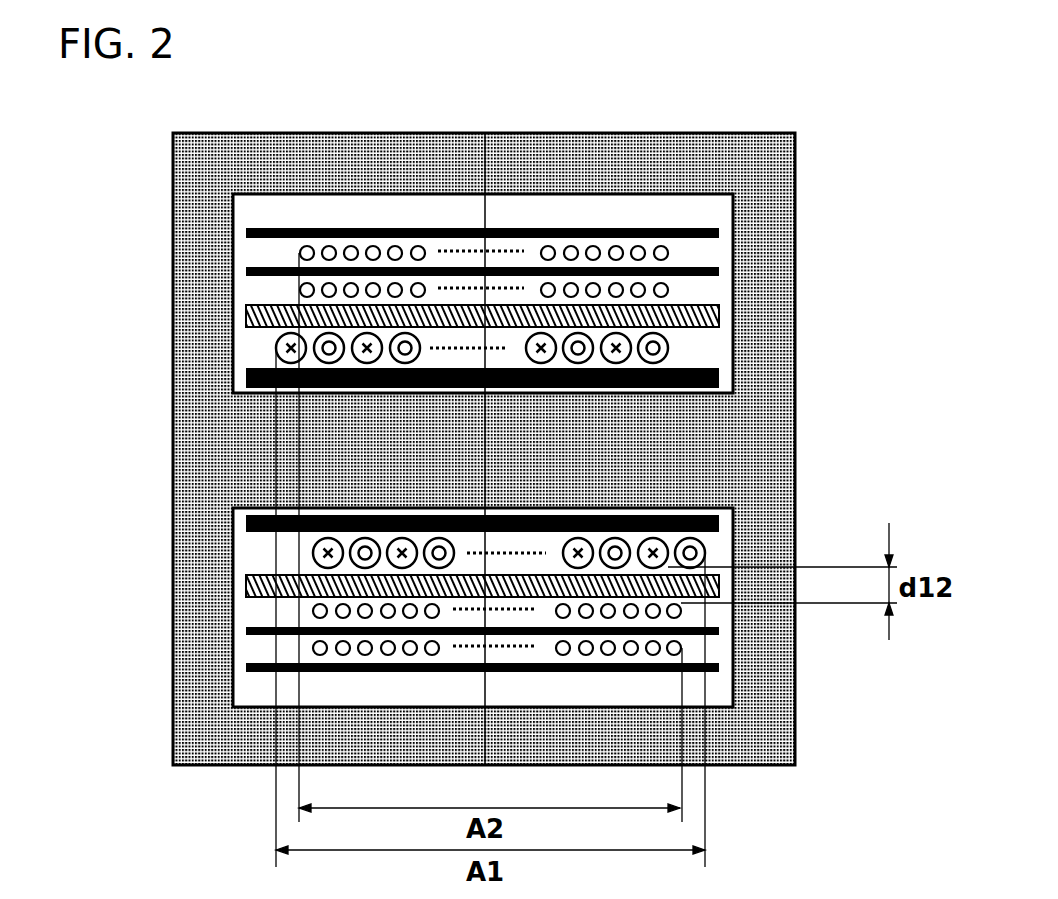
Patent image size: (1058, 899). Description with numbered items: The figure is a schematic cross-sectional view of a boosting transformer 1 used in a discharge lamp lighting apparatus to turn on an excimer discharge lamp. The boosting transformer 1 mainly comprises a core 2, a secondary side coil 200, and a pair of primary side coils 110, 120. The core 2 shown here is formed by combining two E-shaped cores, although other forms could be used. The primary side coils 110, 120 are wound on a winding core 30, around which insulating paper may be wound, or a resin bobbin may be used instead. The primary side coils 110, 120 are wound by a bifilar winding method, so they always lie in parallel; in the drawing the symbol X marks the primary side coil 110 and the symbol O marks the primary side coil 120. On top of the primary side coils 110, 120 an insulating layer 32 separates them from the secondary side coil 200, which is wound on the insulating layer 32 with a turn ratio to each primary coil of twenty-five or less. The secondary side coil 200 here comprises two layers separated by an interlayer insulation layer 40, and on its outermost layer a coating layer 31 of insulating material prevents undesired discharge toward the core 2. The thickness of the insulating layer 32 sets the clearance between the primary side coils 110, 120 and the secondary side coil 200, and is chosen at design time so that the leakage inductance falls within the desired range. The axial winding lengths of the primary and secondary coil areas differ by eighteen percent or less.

The boosting transformer 1 is at (767, 118).
The core 2 is at (795, 193).
The winding core 30 is at (246, 378).
The coating layer 31 is at (246, 233).
The insulating layer 32 is at (246, 313).
The interlayer insulation layer 40 is at (246, 271).
The primary side coil 110 is at (592, 448).
The primary side coil 120 is at (668, 348).
The secondary side coil 200 is at (668, 290).